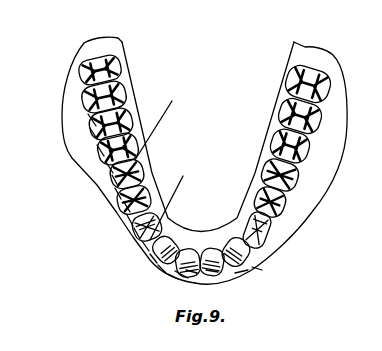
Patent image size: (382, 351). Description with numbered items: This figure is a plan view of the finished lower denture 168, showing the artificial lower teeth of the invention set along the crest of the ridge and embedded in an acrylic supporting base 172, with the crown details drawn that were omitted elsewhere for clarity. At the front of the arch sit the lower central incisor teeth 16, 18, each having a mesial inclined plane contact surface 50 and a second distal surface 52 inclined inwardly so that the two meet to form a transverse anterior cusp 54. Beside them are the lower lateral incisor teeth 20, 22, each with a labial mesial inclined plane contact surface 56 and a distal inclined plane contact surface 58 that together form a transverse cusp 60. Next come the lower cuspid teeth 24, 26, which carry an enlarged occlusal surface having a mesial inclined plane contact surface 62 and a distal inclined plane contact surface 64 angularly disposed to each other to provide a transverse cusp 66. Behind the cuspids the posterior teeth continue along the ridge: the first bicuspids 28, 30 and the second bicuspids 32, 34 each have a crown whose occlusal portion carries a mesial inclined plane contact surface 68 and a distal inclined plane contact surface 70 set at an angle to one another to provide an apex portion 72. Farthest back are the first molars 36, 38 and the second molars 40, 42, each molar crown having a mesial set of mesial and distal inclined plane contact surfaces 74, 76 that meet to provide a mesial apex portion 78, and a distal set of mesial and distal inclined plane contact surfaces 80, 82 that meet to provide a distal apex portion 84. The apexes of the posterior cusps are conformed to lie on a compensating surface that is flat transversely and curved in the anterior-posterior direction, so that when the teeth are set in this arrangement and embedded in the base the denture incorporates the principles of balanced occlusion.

The lower denture 168 is at (80, 52).
The supporting base 172 is at (307, 48).
The second molar 40 is at (118, 70).
The distal apex portion 84 is at (128, 108).
The first molar 36 is at (133, 120).
The second bicuspid 32 is at (142, 152).
The apex portion 72 is at (145, 166).
The first bicuspid 28 is at (152, 188).
The transverse cusp 66 is at (158, 222).
The transverse cusp 60 is at (173, 237).
The lower lateral incisor tooth 20 is at (188, 252).
The second distal surface 52 is at (212, 250).
The lower lateral incisor tooth 22 is at (233, 238).
The lower cuspid tooth 26 is at (270, 238).
The first bicuspid 30 is at (285, 204).
The second bicuspid 34 is at (299, 176).
The first molar 38 is at (320, 130).
The second molar 42 is at (332, 82).
The mesial apex portion 78 is at (163, 123).
The lower cuspid tooth 24 is at (180, 177).
The distal inclined plane contact surface 82 is at (93, 120).
The mesial inclined plane contact surface 80 is at (93, 133).
The distal inclined plane contact surface 76 is at (100, 150).
The mesial inclined plane contact surface 74 is at (110, 167).
The distal inclined plane contact surface 70 is at (115, 178).
The mesial inclined plane contact surface 68 is at (118, 192).
The distal inclined plane contact surface 64 is at (137, 232).
The mesial inclined plane contact surface 62 is at (145, 246).
The distal inclined plane contact surface 58 is at (153, 258).
The labial mesial inclined plane contact surface 56 is at (160, 266).
The transverse anterior cusp 54 is at (170, 275).
The mesial inclined plane contact surface 50 is at (180, 272).
The lower central incisor tooth 16 is at (193, 272).
The lower central incisor tooth 18 is at (212, 272).